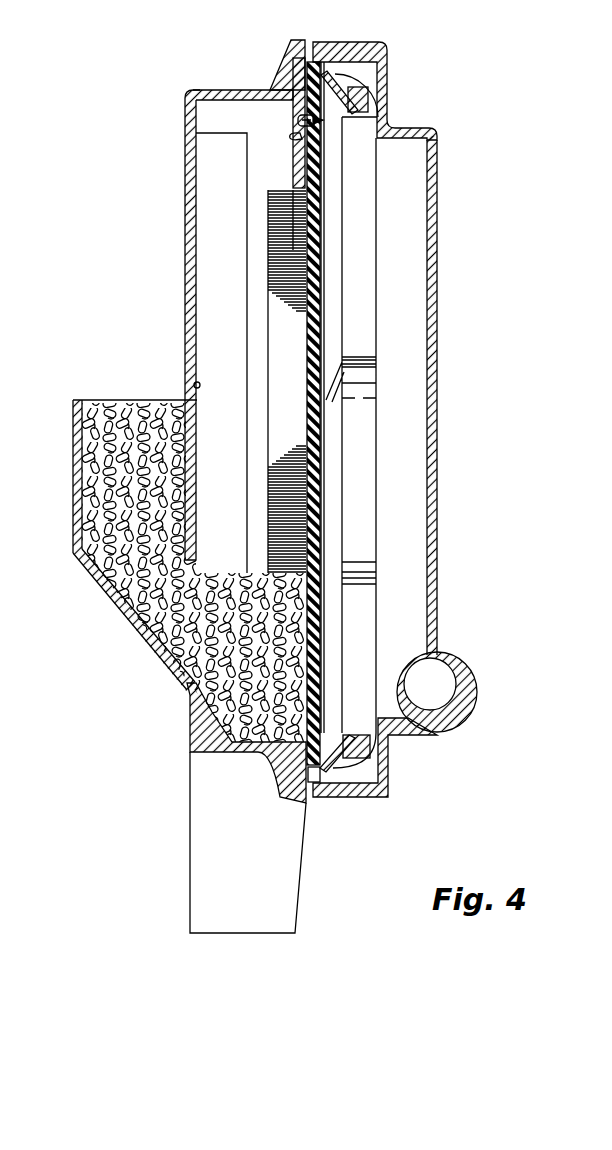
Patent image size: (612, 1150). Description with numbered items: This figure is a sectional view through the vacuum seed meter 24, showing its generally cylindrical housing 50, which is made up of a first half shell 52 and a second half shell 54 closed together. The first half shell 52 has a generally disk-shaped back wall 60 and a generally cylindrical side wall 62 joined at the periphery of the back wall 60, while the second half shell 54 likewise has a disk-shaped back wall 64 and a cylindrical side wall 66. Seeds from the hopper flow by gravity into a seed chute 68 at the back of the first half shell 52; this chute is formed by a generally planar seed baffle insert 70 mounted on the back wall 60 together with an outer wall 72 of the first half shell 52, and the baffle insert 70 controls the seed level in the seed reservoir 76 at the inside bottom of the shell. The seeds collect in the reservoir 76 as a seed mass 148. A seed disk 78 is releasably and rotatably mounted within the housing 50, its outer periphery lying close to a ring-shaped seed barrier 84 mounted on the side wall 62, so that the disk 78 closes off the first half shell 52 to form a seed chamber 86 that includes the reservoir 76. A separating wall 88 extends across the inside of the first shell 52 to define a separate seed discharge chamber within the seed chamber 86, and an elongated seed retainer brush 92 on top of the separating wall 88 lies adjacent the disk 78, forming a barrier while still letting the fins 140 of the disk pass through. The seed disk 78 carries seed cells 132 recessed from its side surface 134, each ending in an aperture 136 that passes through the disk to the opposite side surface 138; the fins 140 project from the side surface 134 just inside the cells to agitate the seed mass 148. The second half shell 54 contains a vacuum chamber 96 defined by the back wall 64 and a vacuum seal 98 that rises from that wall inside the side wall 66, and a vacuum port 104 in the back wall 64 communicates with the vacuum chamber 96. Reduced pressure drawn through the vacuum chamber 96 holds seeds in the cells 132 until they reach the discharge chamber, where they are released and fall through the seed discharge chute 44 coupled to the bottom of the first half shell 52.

The vacuum seed meter 24 is at (433, 108).
The seed discharge chute 44 is at (288, 855).
The cylindrical housing 50 is at (276, 78).
The first half shell 52 is at (188, 122).
The second half shell 54 is at (438, 195).
The back wall 60 is at (190, 190).
The side wall 62 is at (195, 88).
The back wall 64 is at (438, 323).
The side wall 66 is at (362, 46).
The seed chute 68 is at (103, 400).
The seed baffle insert 70 is at (198, 520).
The outer wall 72 is at (74, 455).
The seed reservoir 76 is at (182, 683).
The seed disk 78 is at (313, 450).
The seed barrier 84 is at (289, 60).
The seed chamber 86 is at (188, 348).
The separating wall 88 is at (233, 313).
The seed retainer brush 92 is at (268, 262).
The vacuum chamber 96 is at (403, 540).
The vacuum seal 98 is at (368, 82).
The vacuum port 104 is at (473, 708).
The seed cells 132 is at (307, 117).
The side surface 134 is at (305, 362).
The aperture 136 is at (323, 120).
The side surface 138 is at (315, 250).
The fins 140 is at (268, 218).
The seed mass 148 is at (105, 573).